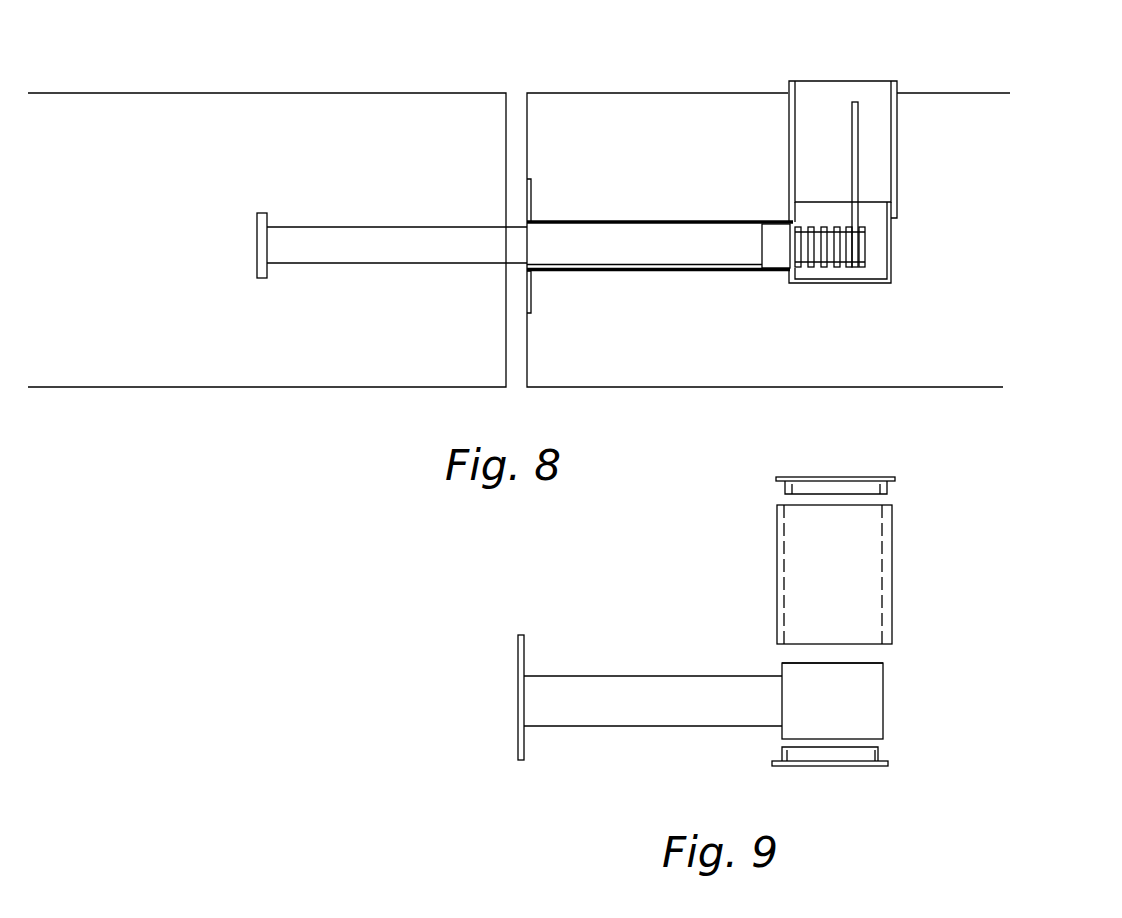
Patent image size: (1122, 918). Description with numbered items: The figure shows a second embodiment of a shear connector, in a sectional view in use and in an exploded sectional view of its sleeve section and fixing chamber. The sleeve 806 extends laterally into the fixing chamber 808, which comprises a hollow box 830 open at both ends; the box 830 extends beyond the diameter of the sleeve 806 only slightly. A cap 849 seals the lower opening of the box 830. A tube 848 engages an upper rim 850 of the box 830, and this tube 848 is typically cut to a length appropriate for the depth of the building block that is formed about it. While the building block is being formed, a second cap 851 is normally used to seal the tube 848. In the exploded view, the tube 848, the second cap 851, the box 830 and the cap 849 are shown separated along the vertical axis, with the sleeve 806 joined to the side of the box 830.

In FIG. 8, the sleeve 806 is at (643, 220).
In FIG. 9, the sleeve 806 is at (639, 675).
In FIG. 8, the fixing chamber 808 is at (877, 260).
In FIG. 9, the fixing chamber 808 is at (875, 715).
In FIG. 8, the hollow box 830 is at (886, 240).
In FIG. 9, the hollow box 830 is at (884, 697).
In FIG. 8, the tube 848 is at (893, 148).
In FIG. 9, the tube 848 is at (893, 573).
In FIG. 9, the cap 849 is at (862, 765).
In FIG. 8, the upper rim 850 is at (893, 200).
In FIG. 9, the upper rim 850 is at (882, 663).
In FIG. 9, the second cap 851 is at (860, 475).